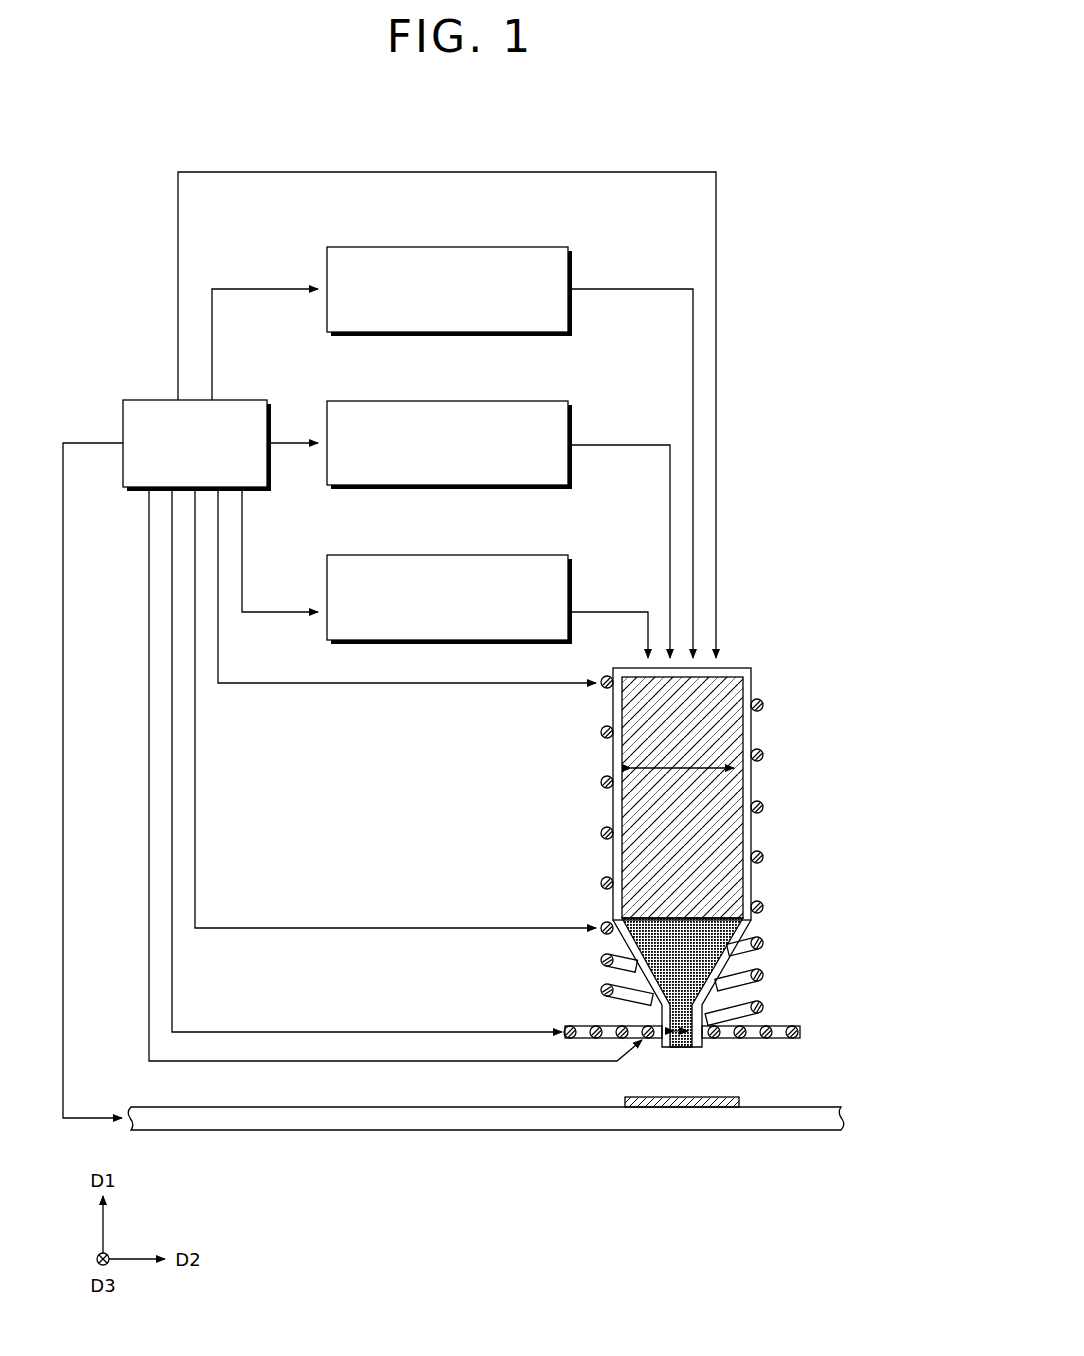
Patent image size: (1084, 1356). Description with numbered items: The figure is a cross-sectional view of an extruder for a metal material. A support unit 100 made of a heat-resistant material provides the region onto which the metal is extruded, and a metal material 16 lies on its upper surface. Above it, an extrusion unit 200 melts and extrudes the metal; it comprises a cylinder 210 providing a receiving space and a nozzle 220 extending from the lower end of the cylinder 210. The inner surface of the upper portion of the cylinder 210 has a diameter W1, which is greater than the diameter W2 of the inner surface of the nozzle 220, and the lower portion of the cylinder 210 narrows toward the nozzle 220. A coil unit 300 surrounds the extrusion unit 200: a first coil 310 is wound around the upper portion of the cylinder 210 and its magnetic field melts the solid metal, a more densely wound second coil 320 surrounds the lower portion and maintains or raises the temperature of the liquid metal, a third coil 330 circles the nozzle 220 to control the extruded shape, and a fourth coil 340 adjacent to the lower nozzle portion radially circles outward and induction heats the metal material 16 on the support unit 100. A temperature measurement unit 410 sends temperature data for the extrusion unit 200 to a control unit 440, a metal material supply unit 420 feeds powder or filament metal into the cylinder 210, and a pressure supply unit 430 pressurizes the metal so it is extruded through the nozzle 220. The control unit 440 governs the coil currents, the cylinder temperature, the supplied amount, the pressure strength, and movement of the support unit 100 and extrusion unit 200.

The support unit 100 is at (845, 1115).
The metal material 16 is at (672, 1108).
The extrusion unit 200 is at (586, 857).
The cylinder 210 is at (606, 790).
The nozzle 220 is at (662, 1012).
The coil unit 300 is at (751, 871).
The first coil 310 is at (763, 705).
The second coil 320 is at (763, 1007).
The third coil 330 is at (715, 1038).
The fourth coil 340 is at (719, 1019).
The temperature measurement unit 410 is at (527, 555).
The metal material supply unit 420 is at (527, 401).
The pressure supply unit 430 is at (527, 247).
The control unit 440 is at (243, 400).
The diameter of the inner surface of the cylinder W1 is at (665, 766).
The diameter of the inner surface of the nozzle W2 is at (676, 1047).